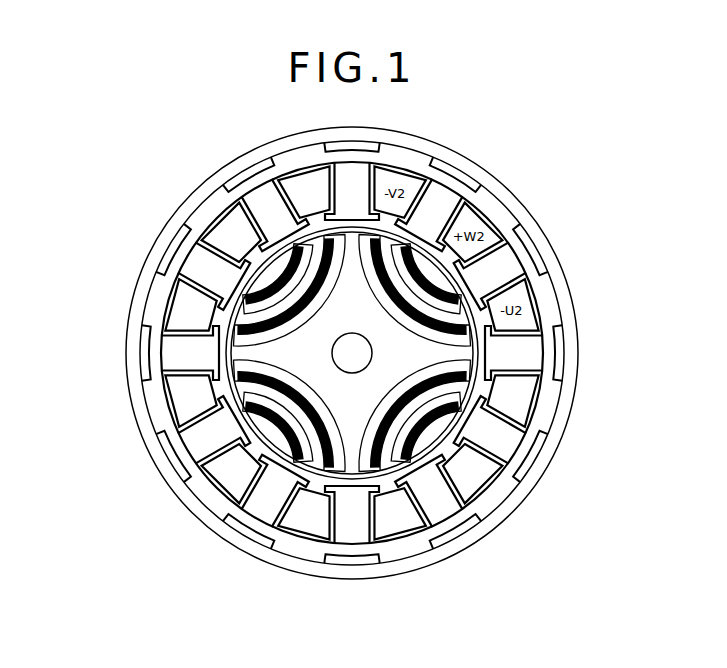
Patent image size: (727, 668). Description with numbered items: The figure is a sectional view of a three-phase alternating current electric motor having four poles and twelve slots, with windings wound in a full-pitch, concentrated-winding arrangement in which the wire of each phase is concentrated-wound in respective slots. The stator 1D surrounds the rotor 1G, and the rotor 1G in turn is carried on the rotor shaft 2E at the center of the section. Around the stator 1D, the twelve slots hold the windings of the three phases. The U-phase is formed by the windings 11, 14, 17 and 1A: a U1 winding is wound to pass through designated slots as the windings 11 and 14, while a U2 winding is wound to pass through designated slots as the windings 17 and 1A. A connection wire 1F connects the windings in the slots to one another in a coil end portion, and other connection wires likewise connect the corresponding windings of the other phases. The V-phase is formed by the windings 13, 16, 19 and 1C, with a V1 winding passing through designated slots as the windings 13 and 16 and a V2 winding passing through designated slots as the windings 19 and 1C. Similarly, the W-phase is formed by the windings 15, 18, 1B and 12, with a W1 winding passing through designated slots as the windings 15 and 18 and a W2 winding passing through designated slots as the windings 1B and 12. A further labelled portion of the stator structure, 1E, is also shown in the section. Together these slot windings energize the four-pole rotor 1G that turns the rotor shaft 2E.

The U-phase winding 1A is at (558, 301).
The W-phase winding 1B is at (508, 236).
The V-phase winding 1C is at (396, 168).
The stator 1D is at (502, 178).
The stator core segment 1E is at (276, 222).
The connection wire 1F is at (143, 290).
The rotor 1G is at (243, 292).
The U-phase winding 11 is at (316, 178).
The W-phase winding 12 is at (232, 246).
The V-phase winding 13 is at (183, 280).
The U-phase winding 14 is at (185, 410).
The W-phase winding 15 is at (235, 474).
The V-phase winding 16 is at (302, 535).
The U-phase winding 17 is at (388, 532).
The W-phase winding 18 is at (482, 478).
The V-phase winding 19 is at (522, 415).
The rotor shaft 2E is at (368, 366).